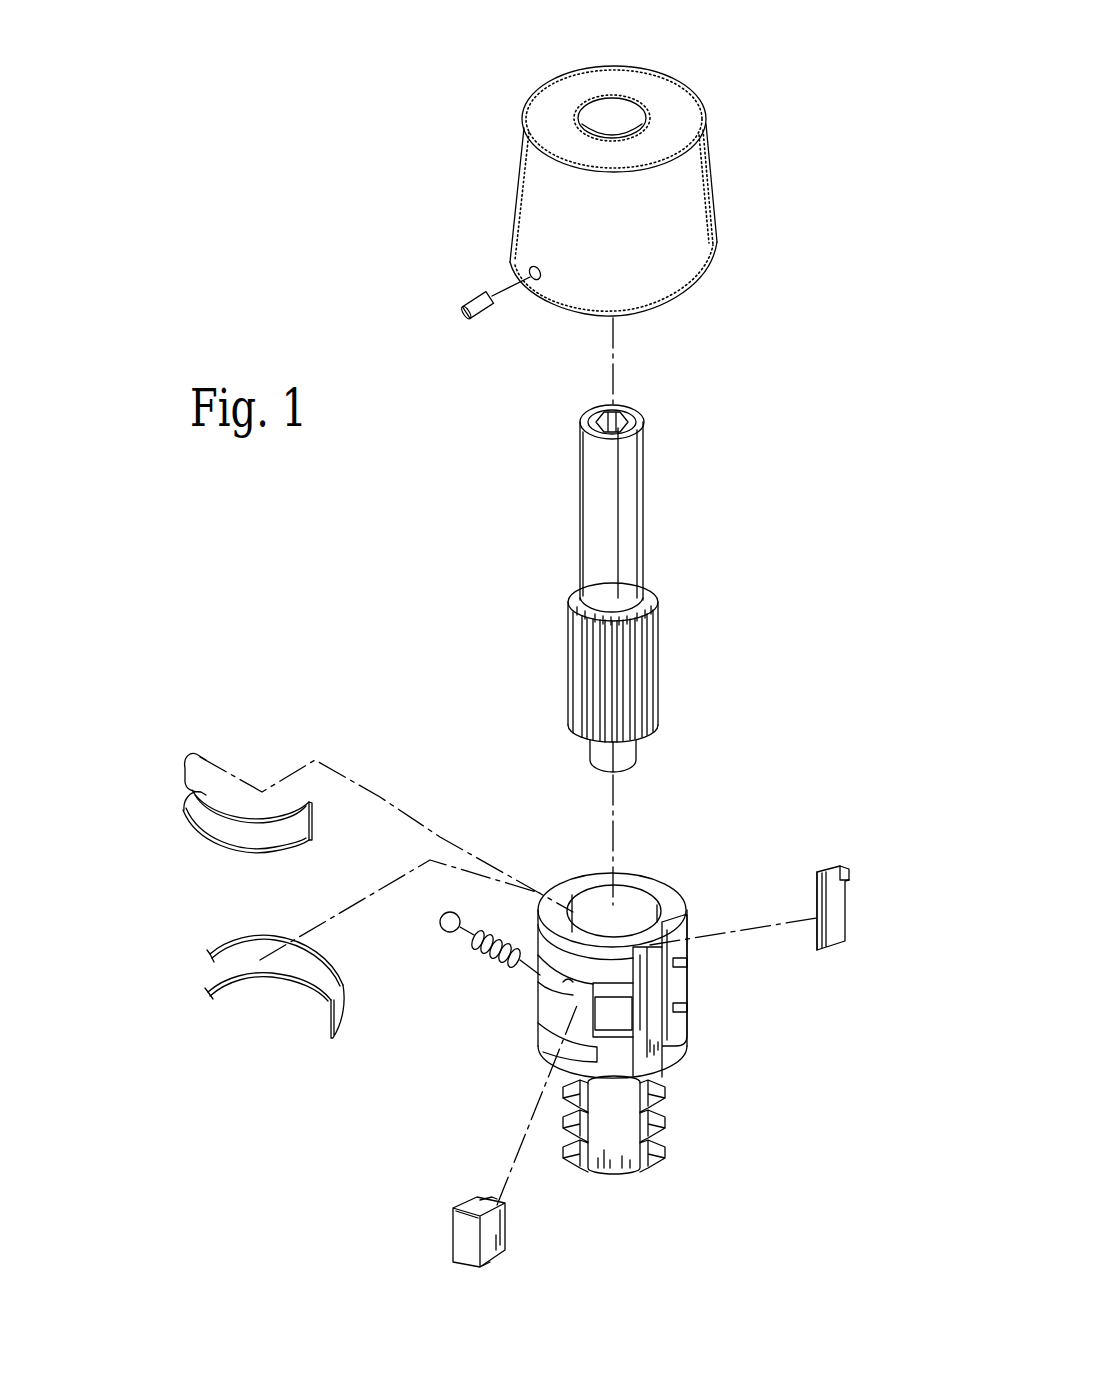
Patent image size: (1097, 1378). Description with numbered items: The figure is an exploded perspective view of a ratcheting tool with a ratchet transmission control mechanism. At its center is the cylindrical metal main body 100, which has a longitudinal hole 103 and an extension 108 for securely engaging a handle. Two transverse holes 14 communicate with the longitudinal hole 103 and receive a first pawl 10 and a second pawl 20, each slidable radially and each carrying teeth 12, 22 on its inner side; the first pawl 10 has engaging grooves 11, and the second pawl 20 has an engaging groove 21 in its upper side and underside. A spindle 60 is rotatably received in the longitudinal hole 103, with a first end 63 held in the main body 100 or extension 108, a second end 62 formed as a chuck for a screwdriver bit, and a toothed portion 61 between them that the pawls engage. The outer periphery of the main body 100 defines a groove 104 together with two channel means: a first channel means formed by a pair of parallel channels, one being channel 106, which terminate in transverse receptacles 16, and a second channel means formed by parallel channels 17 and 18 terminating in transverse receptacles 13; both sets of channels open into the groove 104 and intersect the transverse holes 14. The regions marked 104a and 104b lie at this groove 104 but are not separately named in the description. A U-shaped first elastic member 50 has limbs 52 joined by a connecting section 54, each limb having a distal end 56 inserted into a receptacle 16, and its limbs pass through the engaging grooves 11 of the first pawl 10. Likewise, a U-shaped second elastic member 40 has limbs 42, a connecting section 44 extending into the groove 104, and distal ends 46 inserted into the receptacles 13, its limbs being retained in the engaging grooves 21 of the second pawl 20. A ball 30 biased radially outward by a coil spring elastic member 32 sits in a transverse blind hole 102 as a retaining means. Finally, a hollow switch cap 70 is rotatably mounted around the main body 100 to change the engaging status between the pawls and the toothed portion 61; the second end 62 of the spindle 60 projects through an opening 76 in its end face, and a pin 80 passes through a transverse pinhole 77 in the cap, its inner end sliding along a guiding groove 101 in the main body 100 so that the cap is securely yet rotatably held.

The first pawl 10 is at (840, 881).
The engaging groove 11 is at (845, 868).
The teeth 12 is at (817, 903).
The transverse receptacle 13 is at (573, 913).
The transverse hole 14 is at (597, 1038).
The transverse receptacle 16 is at (540, 923).
The channel 17 is at (615, 995).
The channel 18 is at (583, 1035).
The second pawl 20 is at (468, 1210).
The engaging groove 21 is at (460, 1210).
The teeth 22 is at (486, 1197).
The ball 30 is at (452, 933).
The elastic member 32 is at (496, 950).
The second elastic member 40 is at (214, 798).
The limbs 42 is at (247, 852).
The connecting section 44 is at (310, 825).
The distal end 46 is at (200, 753).
The first elastic member 50 is at (271, 1014).
The limbs 52 is at (333, 953).
The connecting section 54 is at (340, 1020).
The distal end 56 is at (210, 957).
The spindle 60 is at (643, 582).
The toothed portion 61 is at (640, 657).
The second end 62 is at (642, 415).
The first end 63 is at (597, 746).
The switch cap 70 is at (700, 193).
The opening 76 is at (613, 105).
The transverse pinhole 77 is at (535, 285).
The pin 80 is at (477, 322).
The main body 100 is at (629, 988).
The guiding groove 101 is at (563, 1048).
The transverse blind hole 102 is at (568, 985).
The longitudinal hole 103 is at (688, 962).
The groove 104 is at (665, 922).
The rail wall 104a is at (680, 1030).
The rail inner wall 104b is at (662, 1040).
The channel 106 is at (688, 1007).
The extension 108 is at (668, 1108).